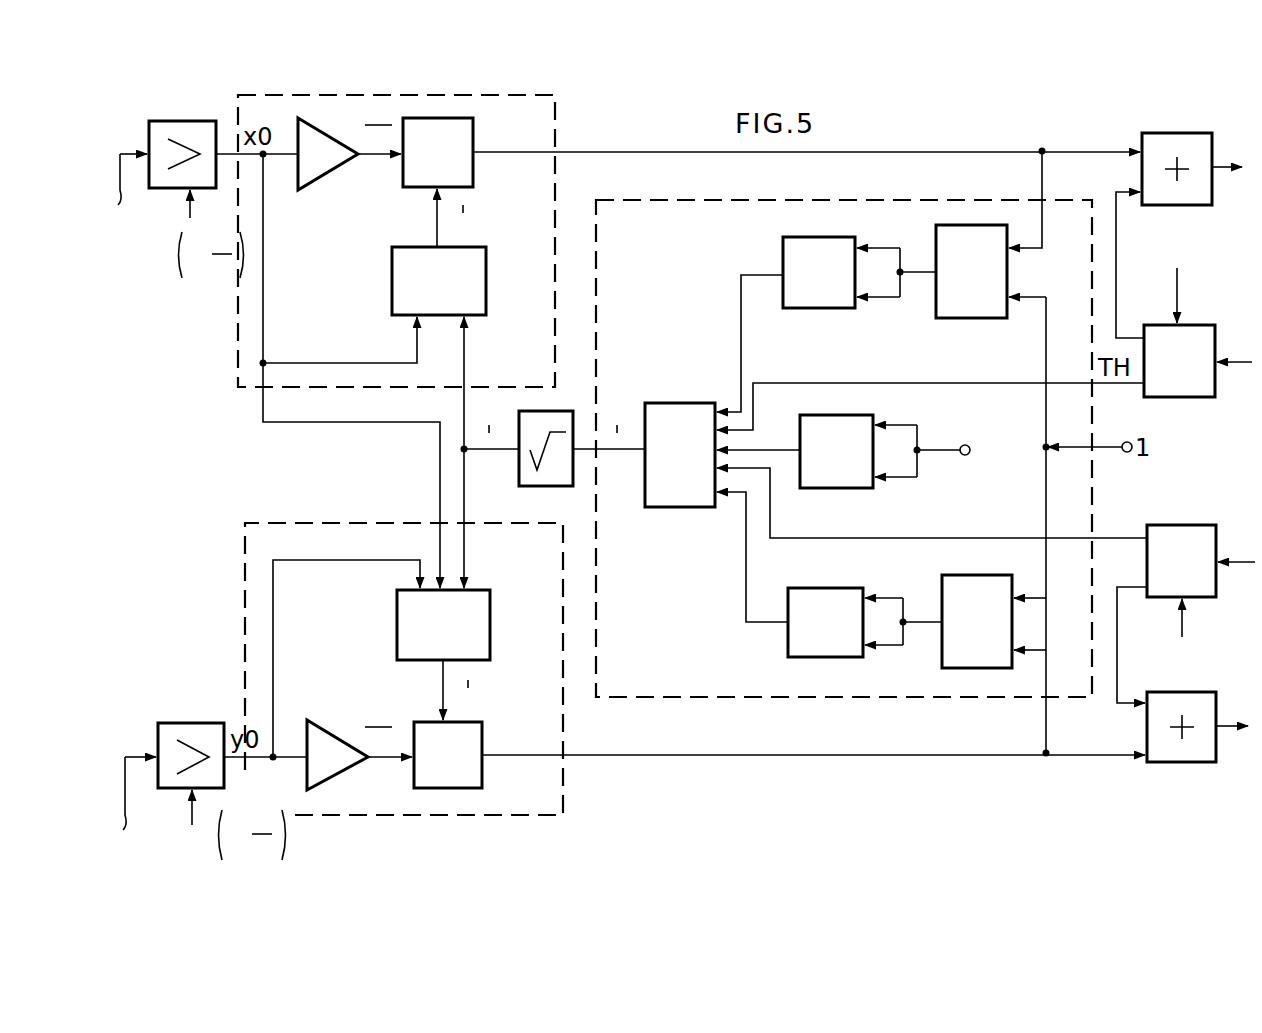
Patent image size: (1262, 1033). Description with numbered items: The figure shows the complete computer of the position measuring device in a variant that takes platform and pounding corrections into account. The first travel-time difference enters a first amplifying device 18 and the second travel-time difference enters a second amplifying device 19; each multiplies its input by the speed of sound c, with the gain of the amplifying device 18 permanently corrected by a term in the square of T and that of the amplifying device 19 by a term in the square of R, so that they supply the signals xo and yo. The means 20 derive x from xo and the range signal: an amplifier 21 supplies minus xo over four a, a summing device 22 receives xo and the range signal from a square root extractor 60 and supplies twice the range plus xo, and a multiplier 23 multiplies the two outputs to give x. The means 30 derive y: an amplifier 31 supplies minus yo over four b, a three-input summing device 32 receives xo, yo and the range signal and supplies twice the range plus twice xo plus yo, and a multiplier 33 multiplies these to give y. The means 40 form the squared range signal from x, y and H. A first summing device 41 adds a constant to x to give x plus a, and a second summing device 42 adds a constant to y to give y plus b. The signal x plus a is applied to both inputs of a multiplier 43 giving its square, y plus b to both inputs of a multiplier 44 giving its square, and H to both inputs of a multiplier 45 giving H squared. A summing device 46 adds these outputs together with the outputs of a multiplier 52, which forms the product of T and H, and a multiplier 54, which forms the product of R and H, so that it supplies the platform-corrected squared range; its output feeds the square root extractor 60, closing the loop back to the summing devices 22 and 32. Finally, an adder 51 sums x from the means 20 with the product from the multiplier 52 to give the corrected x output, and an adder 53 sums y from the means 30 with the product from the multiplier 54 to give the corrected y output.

The first amplifying device 18 is at (185, 160).
The second amplifying device 19 is at (185, 740).
The means for supplying x 20 is at (243, 320).
The amplifier 21 is at (318, 160).
The summing device 22 is at (470, 290).
The multiplier 23 is at (460, 150).
The means for supplying y 30 is at (245, 570).
The amplifier 31 is at (325, 745).
The summing device 32 is at (410, 650).
The multiplier 33 is at (465, 748).
The means for supplying d1² 40 is at (676, 650).
The first summing device 41 is at (985, 290).
The second summing device 42 is at (968, 648).
The multiplier 43 is at (795, 290).
The multiplier 44 is at (815, 640).
The multiplier 45 is at (860, 425).
The summing device 46 is at (668, 430).
The adder 51 is at (1175, 195).
The multiplier 52 is at (1168, 385).
The adder 53 is at (1195, 712).
The multiplier 54 is at (1195, 545).
The square root extractor 60 is at (525, 440).